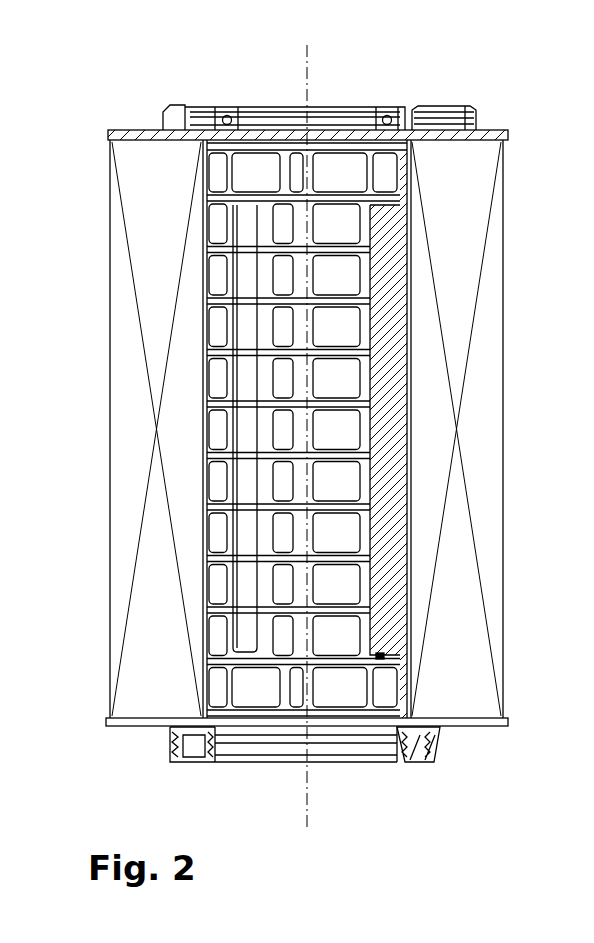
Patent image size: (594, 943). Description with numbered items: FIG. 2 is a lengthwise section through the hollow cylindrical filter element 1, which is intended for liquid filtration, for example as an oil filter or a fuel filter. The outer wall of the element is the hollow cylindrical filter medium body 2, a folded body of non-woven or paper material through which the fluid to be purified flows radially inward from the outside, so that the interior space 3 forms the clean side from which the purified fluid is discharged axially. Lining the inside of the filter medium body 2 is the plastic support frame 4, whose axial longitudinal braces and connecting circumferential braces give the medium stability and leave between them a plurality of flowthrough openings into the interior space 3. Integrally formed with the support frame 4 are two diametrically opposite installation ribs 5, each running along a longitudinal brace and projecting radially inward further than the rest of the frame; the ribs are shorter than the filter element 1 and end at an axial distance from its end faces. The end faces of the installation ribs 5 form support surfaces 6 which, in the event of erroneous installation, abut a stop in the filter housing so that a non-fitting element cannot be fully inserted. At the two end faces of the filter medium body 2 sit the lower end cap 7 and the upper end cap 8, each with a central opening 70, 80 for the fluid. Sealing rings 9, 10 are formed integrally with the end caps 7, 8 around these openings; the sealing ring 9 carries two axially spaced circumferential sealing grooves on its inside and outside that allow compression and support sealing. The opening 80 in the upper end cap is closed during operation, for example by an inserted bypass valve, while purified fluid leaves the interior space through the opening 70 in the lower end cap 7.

The filter element 1 is at (137, 84).
The filter medium body 2 is at (120, 349).
The interior space 3 is at (333, 165).
The support frame 4 is at (255, 200).
The installation ribs 5 is at (383, 487).
The support surface 6 is at (379, 657).
The end cap 7 is at (120, 730).
The end cap 8 is at (130, 128).
The sealing ring 9 is at (421, 742).
The sealing ring 10 is at (452, 106).
The central opening 70 is at (276, 727).
The central opening 80 is at (285, 130).